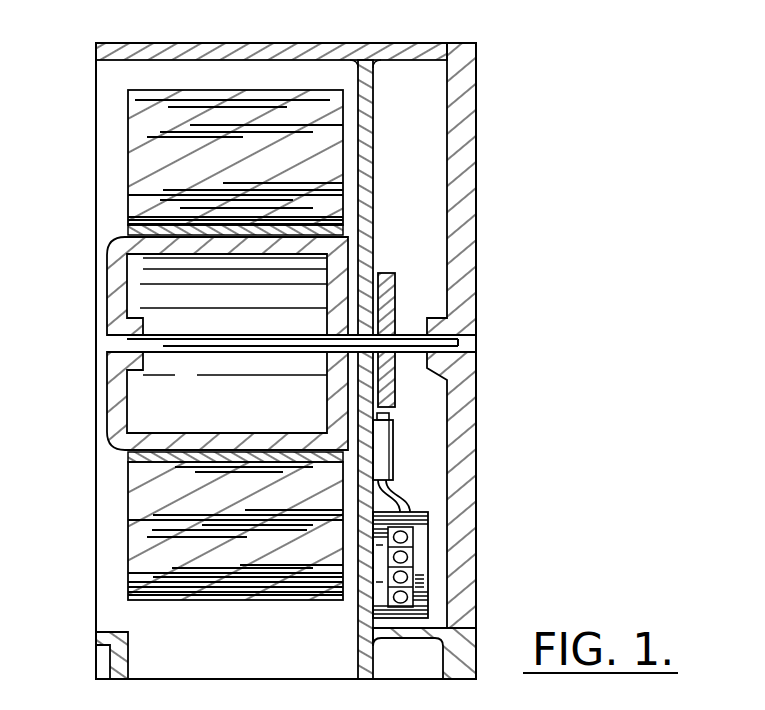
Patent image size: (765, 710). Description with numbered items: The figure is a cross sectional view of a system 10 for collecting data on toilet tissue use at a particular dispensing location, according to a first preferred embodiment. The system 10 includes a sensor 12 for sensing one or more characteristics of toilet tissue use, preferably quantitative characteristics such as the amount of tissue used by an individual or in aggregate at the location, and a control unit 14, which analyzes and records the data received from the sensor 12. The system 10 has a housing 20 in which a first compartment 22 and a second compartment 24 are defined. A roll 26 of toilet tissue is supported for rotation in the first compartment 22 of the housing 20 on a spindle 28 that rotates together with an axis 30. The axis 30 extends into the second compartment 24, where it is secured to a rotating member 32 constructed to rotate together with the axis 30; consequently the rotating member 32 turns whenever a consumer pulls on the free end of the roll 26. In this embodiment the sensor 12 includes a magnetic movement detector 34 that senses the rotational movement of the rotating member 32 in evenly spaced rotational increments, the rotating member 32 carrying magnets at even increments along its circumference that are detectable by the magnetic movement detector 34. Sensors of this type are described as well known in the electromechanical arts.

The system 10 is at (507, 398).
The sensor 12 is at (425, 472).
The control unit 14 is at (420, 562).
The housing 20 is at (495, 147).
The first compartment 22 is at (150, 70).
The second compartment 24 is at (432, 105).
The roll 26 is at (283, 90).
The spindle 28 is at (107, 413).
The axis 30 is at (183, 337).
The rotating member 32 is at (390, 293).
The magnetic movement detector 34 is at (393, 480).